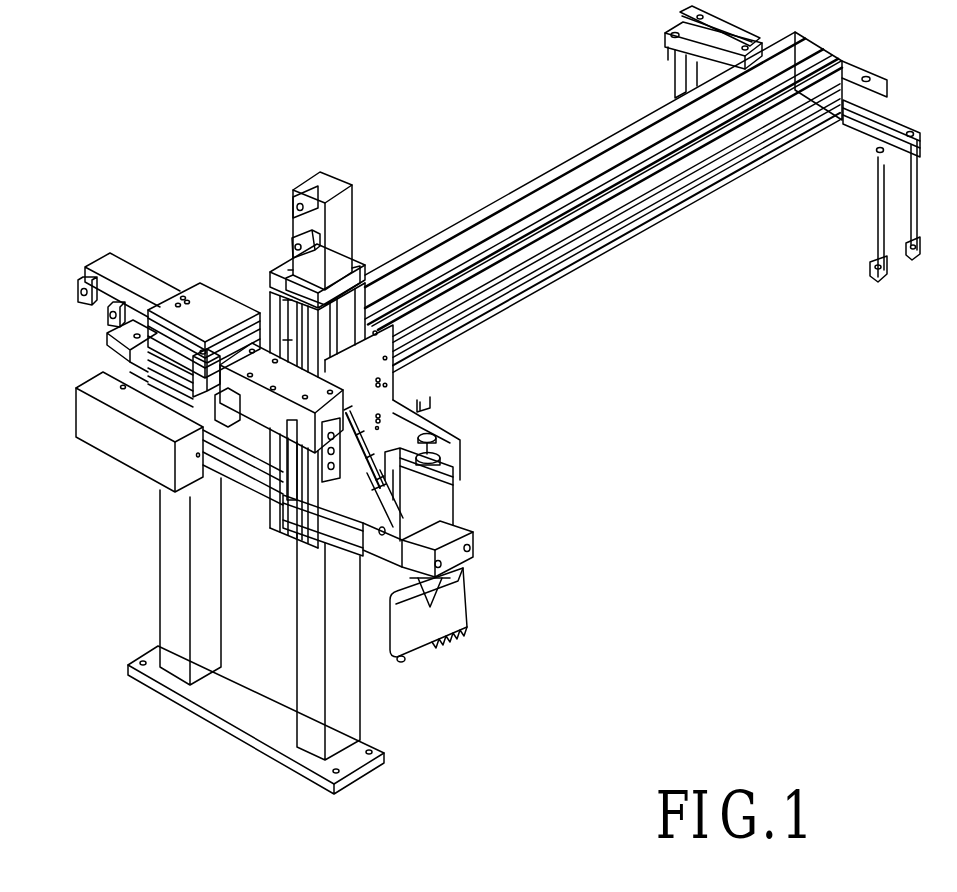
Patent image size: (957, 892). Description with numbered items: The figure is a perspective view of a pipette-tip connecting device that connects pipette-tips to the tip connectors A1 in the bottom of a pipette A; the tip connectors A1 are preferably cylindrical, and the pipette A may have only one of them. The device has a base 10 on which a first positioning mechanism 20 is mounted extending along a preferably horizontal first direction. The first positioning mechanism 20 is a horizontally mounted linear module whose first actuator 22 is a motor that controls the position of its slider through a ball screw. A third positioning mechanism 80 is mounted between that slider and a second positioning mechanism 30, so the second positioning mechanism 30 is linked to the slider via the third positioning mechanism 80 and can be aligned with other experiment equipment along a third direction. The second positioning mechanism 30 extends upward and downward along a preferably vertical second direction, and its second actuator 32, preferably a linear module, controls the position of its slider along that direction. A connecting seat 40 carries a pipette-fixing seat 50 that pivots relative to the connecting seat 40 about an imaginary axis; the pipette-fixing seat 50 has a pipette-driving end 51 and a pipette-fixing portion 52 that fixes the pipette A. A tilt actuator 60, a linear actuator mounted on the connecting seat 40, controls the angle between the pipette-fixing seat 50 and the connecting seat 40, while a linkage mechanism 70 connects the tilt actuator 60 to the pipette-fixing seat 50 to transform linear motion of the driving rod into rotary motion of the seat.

The base 10 is at (148, 598).
The first positioning mechanism 20 is at (213, 290).
The first actuator 22 is at (103, 265).
The second positioning mechanism 30 is at (370, 248).
The second actuator 32 is at (344, 205).
The connecting seat 40 is at (395, 386).
The pipette-fixing seat 50 is at (405, 500).
The pipette-driving end 51 is at (415, 460).
The pipette-fixing portion 52 is at (455, 556).
The tilt actuator 60 is at (272, 445).
The linkage mechanism 70 is at (372, 444).
The third positioning mechanism 80 is at (613, 118).
The pipette A is at (472, 601).
The tip connector A1 is at (457, 637).